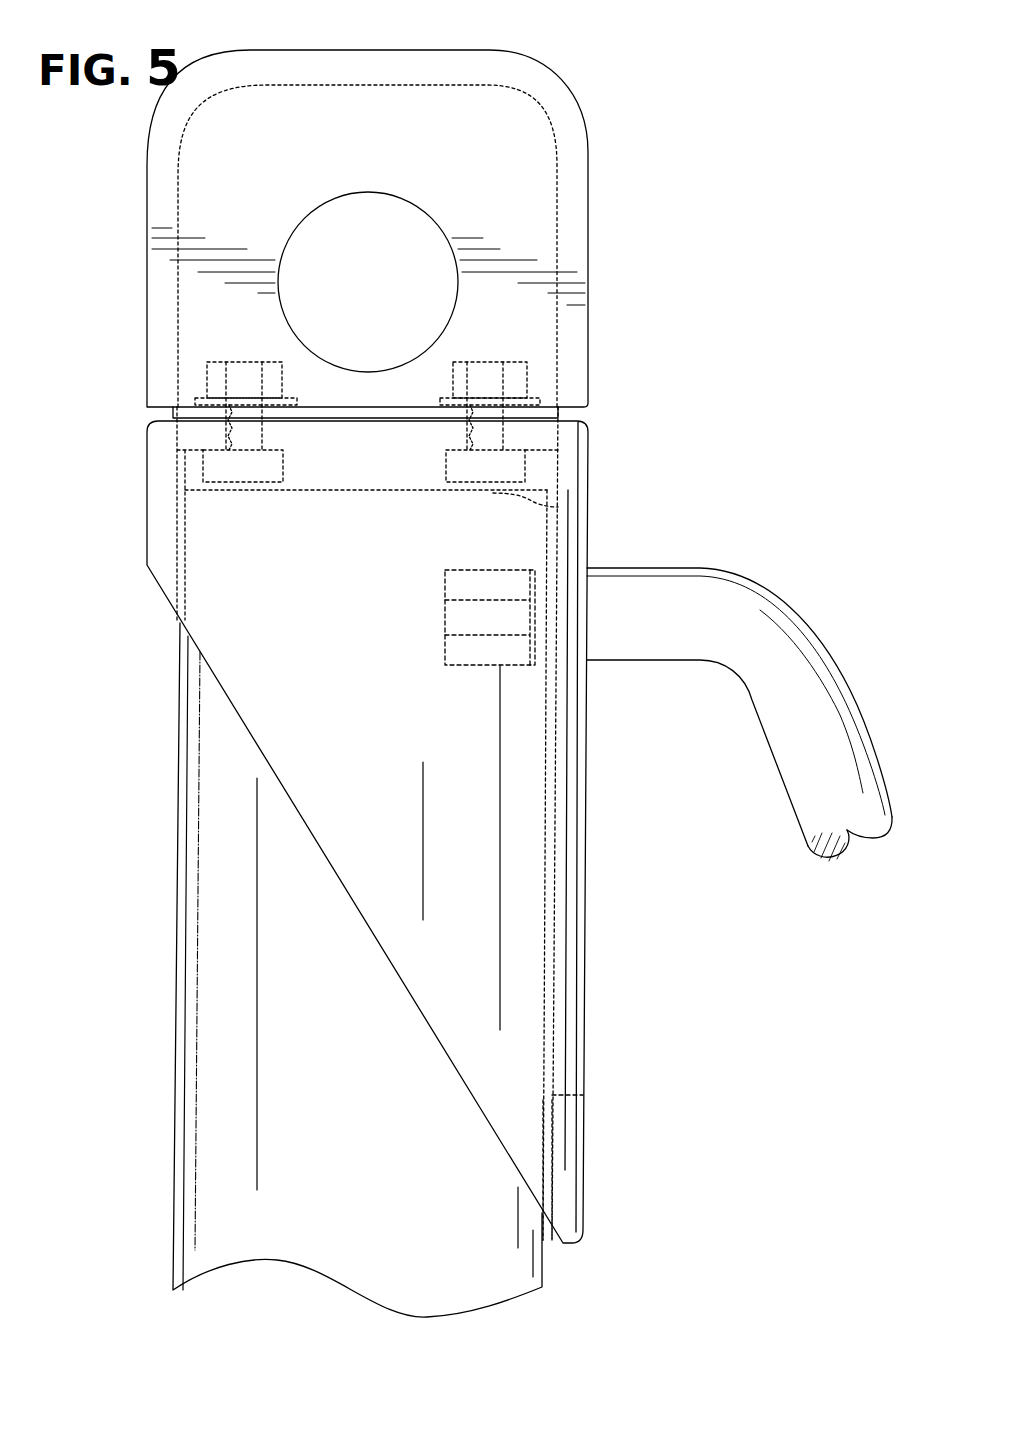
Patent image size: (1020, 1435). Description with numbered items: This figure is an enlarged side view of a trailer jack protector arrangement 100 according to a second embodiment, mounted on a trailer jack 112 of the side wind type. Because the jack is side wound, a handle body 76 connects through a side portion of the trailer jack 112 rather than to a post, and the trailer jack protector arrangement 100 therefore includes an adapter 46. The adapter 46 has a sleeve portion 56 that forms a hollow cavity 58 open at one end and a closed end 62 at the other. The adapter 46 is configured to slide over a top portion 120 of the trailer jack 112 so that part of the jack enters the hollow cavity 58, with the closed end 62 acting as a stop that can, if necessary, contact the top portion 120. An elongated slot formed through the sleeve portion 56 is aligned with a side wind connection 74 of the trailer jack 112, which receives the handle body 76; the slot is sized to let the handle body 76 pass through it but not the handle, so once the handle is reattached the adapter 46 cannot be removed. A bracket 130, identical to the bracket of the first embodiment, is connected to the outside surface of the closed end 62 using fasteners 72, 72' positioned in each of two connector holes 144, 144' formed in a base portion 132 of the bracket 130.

The trailer jack protector arrangement 100 is at (806, 257).
The bracket 130 is at (522, 104).
The base portion 132 is at (585, 407).
The connector hole 144 is at (189, 348).
The connector hole 144' is at (550, 344).
The fastener 72 is at (162, 468).
The fastener 72' is at (570, 466).
The closed end 62 is at (470, 443).
The top portion 120 is at (558, 505).
The adapter 46 is at (152, 608).
The side wind connection 74 is at (445, 613).
The handle body 76 is at (820, 688).
The sleeve portion 56 is at (467, 898).
The trailer jack 112 is at (129, 952).
The hollow cavity 58 is at (548, 1150).